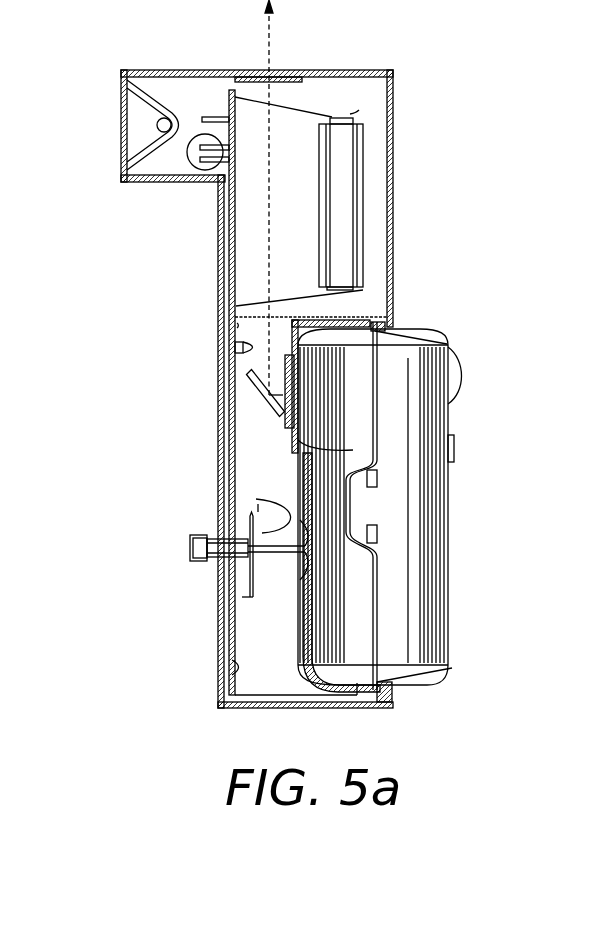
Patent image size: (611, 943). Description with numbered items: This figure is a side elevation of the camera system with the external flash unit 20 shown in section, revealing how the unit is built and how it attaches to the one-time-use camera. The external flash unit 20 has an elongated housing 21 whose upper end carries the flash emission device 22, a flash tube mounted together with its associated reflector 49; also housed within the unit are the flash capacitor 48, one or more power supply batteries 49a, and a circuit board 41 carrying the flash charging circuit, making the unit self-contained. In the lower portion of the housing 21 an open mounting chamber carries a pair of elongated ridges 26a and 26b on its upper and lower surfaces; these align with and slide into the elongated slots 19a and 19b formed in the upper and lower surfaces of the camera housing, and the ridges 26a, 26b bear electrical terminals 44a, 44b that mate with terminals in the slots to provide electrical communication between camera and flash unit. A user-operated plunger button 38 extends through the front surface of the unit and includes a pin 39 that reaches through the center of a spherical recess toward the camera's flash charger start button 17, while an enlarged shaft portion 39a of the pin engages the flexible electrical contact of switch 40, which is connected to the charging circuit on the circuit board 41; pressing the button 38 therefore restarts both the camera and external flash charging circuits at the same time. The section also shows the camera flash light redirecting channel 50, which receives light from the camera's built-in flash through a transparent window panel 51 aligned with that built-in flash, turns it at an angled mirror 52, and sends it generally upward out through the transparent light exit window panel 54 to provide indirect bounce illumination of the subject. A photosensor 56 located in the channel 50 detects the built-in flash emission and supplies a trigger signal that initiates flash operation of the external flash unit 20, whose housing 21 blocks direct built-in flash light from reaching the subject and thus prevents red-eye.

The flash charger start button 17 is at (297, 570).
The elongated slot 19a is at (450, 342).
The elongated slot 19b is at (450, 670).
The external flash unit 20 is at (397, 83).
The elongated housing 21 is at (393, 125).
The flash emission device 22 is at (157, 125).
The elongated ridge 26a is at (378, 323).
The elongated ridge 26b is at (379, 695).
The plunger button 38 is at (190, 545).
The pin 39 is at (234, 556).
The enlarged shaft portion 39a is at (242, 597).
The switch 40 is at (256, 498).
The circuit board 41 is at (247, 222).
The electrical terminal 44a is at (383, 318).
The electrical terminal 44b is at (357, 700).
The flash capacitor 48 is at (198, 137).
The reflector 49 is at (150, 158).
The power supply battery 49a is at (363, 183).
The flash light redirecting channel 50 is at (300, 219).
The transparent window panel 51 is at (247, 376).
The angled mirror 52 is at (262, 388).
The light exit window panel 54 is at (283, 73).
The photosensor 56 is at (262, 344).